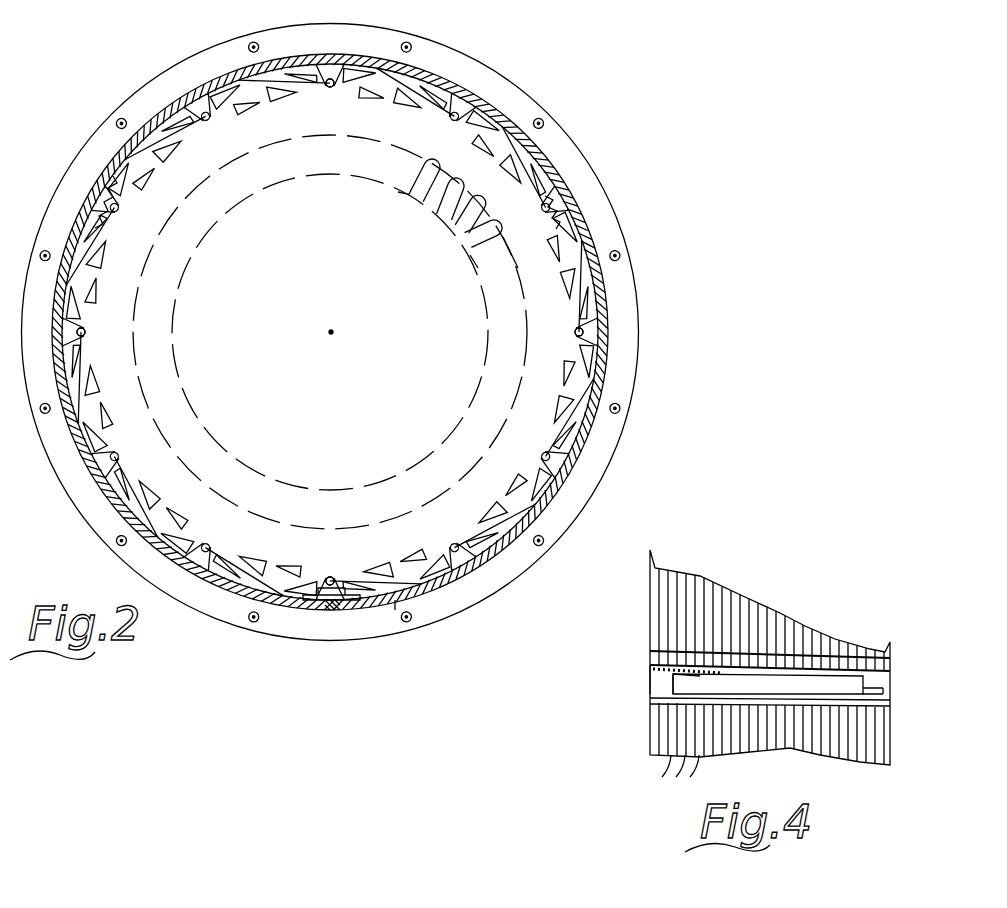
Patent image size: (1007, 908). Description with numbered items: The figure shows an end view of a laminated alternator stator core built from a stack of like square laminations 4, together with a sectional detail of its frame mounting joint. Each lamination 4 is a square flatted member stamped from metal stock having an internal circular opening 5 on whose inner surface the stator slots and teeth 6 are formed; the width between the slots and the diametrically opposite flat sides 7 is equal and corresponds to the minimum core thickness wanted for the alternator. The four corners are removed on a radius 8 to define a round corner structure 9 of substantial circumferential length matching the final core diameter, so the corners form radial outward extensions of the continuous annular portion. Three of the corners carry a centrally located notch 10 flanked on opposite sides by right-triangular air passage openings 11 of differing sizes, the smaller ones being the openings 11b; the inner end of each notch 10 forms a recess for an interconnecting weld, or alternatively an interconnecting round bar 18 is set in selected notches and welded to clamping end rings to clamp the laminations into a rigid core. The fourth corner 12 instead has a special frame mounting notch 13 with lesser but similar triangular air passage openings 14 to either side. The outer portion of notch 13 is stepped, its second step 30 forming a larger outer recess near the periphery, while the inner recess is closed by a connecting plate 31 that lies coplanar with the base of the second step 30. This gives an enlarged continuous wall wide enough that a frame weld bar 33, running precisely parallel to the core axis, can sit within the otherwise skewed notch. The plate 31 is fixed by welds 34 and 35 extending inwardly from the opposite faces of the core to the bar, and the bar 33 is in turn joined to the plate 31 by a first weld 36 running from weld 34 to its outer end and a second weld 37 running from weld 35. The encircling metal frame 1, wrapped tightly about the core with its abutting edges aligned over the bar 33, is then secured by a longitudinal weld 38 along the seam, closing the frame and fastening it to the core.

In FIG. 2, the metal frame 1 is at (150, 10).
In FIG. 2, the square lamination 4 is at (496, 360).
In FIG. 4, the square lamination 4 is at (661, 774).
In FIG. 2, the internal circular opening 5 is at (196, 252).
In FIG. 2, the stator slots and teeth 6 is at (463, 243).
In FIG. 2, the flat sides 7 is at (217, 207).
In FIG. 2, the radius 8 is at (495, 292).
In FIG. 2, the corner structure 9 is at (610, 290).
In FIG. 2, the notch 10 is at (300, 0).
In FIG. 2, the air passage openings 11 is at (304, 98).
In FIG. 2, the smaller openings 11b is at (247, 100).
In FIG. 2, the fourth corner 12 is at (397, 600).
In FIG. 2, the frame mounting notch 13 is at (117, 213).
In FIG. 2, the air passage openings 14 is at (503, 177).
In FIG. 2, the interconnecting round bar 18 is at (332, 92).
In FIG. 4, the second step 30 is at (882, 668).
In FIG. 4, the connecting plate 31 is at (650, 673).
In FIG. 4, the frame weld bar 33 is at (785, 680).
In FIG. 4, the weld 34 is at (872, 705).
In FIG. 4, the weld 35 is at (658, 668).
In FIG. 4, the first weld 36 is at (860, 694).
In FIG. 4, the second weld 37 is at (690, 675).
In FIG. 2, the longitudinal weld 38 is at (331, 610).